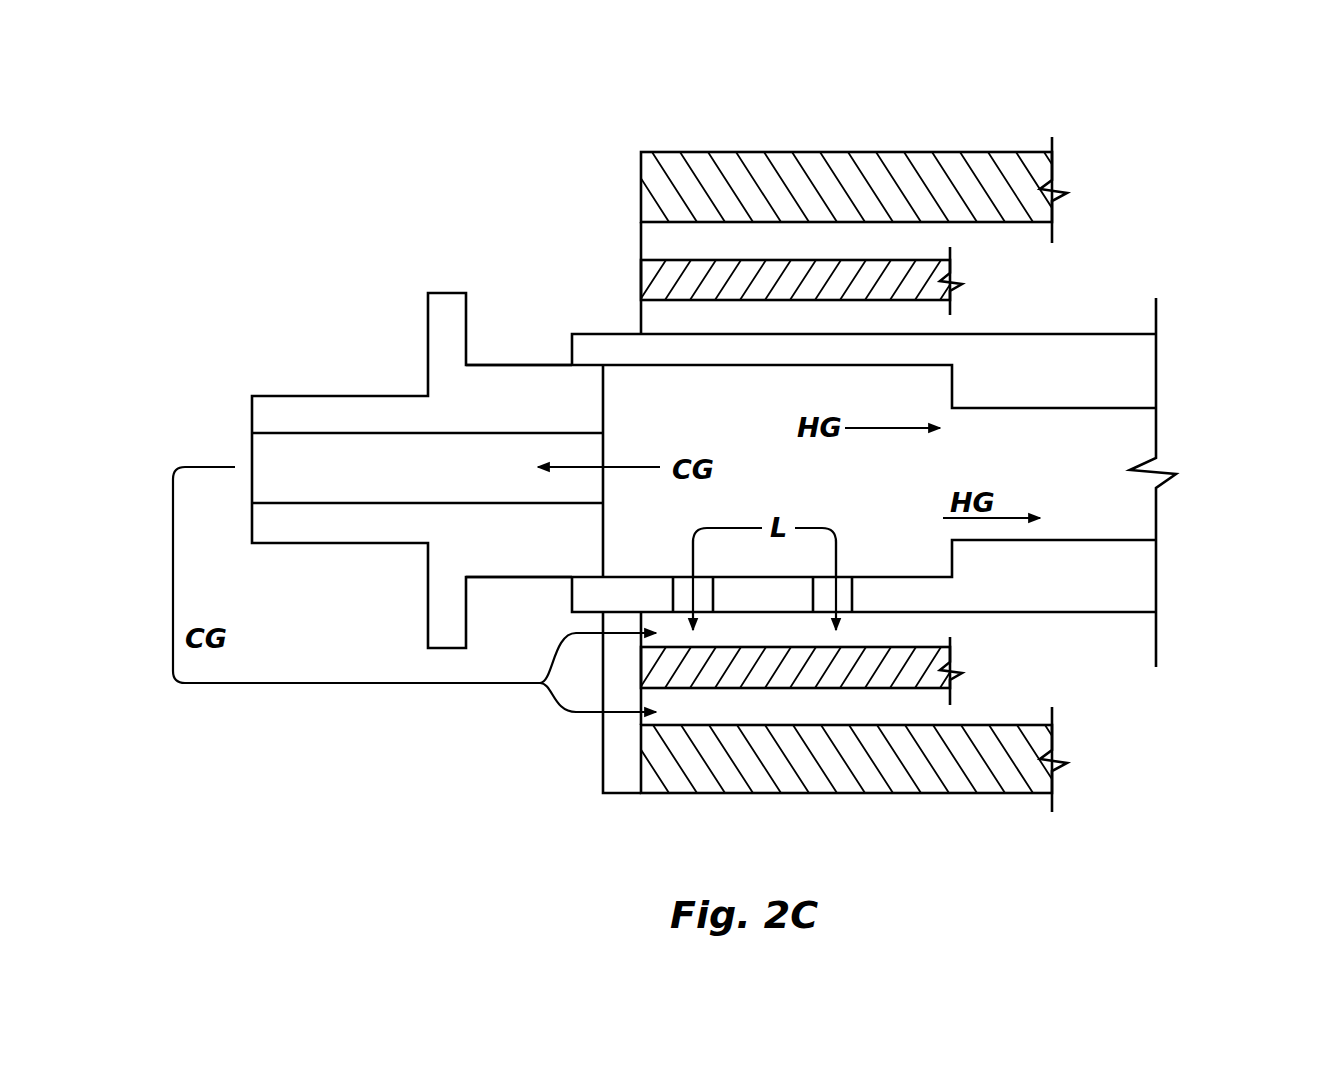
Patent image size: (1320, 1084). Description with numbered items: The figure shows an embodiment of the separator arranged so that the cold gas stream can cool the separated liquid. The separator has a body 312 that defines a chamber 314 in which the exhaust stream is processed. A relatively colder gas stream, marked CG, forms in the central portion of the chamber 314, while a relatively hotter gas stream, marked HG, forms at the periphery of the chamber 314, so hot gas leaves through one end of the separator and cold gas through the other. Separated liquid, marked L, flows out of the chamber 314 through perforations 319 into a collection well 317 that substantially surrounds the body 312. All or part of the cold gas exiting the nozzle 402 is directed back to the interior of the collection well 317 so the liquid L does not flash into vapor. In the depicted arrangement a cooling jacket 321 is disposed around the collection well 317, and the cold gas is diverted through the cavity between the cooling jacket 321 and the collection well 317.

The body 312 is at (1068, 334).
The chamber 314 is at (1136, 506).
The collection well 317 is at (641, 280).
The perforations 319 is at (843, 577).
The cooling jacket 321 is at (745, 152).
The nozzle 402 is at (340, 396).